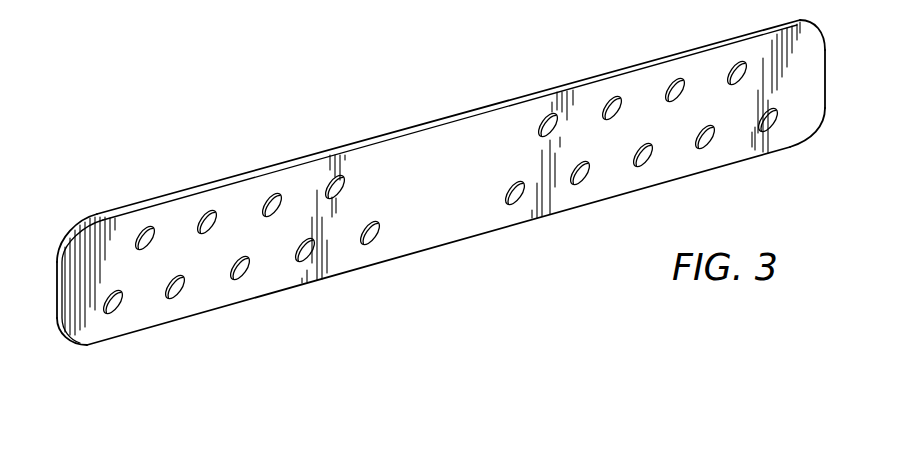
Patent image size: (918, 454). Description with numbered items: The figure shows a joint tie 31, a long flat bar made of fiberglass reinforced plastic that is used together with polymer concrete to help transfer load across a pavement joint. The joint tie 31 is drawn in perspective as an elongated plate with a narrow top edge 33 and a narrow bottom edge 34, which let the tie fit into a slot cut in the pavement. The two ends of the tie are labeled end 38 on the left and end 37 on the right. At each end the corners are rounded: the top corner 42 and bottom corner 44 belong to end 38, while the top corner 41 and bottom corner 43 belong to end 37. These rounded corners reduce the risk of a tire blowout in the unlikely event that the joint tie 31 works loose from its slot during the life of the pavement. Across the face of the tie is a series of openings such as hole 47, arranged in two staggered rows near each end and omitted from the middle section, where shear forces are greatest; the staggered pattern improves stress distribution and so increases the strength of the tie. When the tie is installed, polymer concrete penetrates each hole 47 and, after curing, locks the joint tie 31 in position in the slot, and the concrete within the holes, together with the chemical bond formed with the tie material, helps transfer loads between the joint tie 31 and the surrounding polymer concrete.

The joint tie 31 is at (442, 202).
The top edge 33 is at (232, 176).
The bottom edge 34 is at (278, 293).
The end 37 is at (826, 68).
The end 38 is at (55, 277).
The top corner 41 is at (805, 22).
The top corner 42 is at (73, 228).
The bottom corner 43 is at (813, 132).
The bottom corner 44 is at (80, 345).
The hole 47 is at (618, 97).